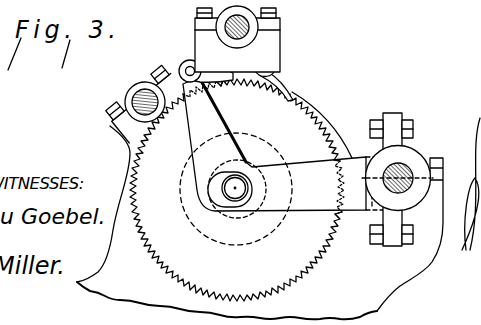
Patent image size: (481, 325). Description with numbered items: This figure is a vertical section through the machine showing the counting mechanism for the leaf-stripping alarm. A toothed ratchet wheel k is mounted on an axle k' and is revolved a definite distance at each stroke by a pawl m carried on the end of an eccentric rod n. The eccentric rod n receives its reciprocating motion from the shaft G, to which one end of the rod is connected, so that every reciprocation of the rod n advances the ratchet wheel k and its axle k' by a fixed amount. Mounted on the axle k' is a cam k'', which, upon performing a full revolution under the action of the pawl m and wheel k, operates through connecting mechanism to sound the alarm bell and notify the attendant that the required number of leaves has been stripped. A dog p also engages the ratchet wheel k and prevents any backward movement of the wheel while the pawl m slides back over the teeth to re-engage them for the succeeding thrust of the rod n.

The ratchet wheel k is at (237, 190).
The axle k' is at (230, 207).
The cam k'' is at (250, 167).
The eccentric rod n is at (308, 144).
The pawl m is at (220, 55).
The dog p is at (286, 76).
The shaft G is at (413, 163).